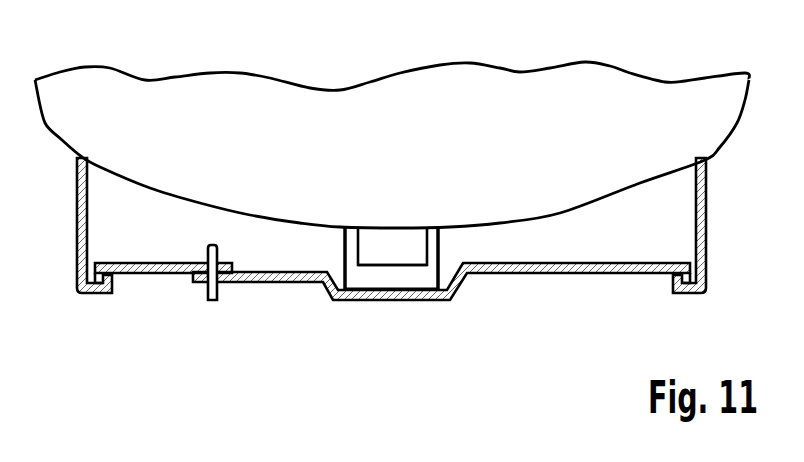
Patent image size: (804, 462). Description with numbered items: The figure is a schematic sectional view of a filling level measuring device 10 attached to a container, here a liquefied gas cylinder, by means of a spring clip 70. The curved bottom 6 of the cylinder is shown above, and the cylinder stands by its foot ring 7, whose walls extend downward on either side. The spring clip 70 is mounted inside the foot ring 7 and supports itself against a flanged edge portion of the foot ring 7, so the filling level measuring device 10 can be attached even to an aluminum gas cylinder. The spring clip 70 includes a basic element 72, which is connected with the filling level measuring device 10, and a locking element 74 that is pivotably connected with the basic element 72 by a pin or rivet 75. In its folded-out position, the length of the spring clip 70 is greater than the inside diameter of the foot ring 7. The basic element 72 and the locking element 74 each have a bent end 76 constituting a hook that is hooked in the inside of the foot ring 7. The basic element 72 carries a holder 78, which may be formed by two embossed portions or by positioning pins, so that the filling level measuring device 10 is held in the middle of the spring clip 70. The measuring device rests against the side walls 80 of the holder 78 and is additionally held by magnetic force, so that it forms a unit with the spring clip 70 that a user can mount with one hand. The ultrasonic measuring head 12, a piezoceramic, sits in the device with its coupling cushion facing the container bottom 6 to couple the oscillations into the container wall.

The bottom 6 is at (115, 182).
The foot ring 7 is at (703, 222).
The filling level measuring device 10 is at (416, 278).
The ultrasonic measuring head 12 is at (392, 242).
The spring clip 70 is at (504, 332).
The basic element 72 is at (573, 268).
The locking element 74 is at (160, 270).
The pin or rivet 75 is at (212, 300).
The bent end 76 is at (92, 282).
The holder 78 is at (386, 292).
The side walls 80 is at (343, 263).